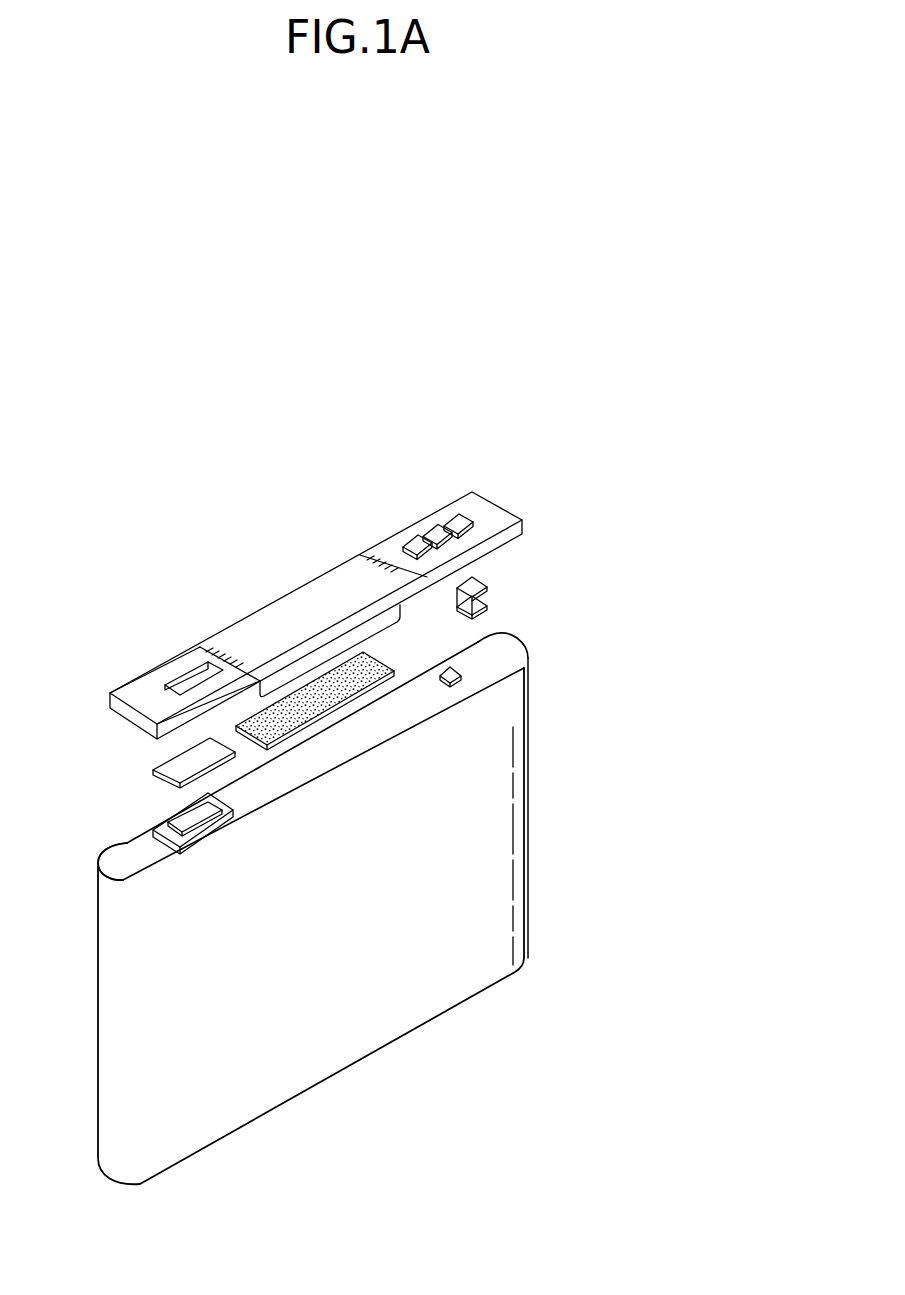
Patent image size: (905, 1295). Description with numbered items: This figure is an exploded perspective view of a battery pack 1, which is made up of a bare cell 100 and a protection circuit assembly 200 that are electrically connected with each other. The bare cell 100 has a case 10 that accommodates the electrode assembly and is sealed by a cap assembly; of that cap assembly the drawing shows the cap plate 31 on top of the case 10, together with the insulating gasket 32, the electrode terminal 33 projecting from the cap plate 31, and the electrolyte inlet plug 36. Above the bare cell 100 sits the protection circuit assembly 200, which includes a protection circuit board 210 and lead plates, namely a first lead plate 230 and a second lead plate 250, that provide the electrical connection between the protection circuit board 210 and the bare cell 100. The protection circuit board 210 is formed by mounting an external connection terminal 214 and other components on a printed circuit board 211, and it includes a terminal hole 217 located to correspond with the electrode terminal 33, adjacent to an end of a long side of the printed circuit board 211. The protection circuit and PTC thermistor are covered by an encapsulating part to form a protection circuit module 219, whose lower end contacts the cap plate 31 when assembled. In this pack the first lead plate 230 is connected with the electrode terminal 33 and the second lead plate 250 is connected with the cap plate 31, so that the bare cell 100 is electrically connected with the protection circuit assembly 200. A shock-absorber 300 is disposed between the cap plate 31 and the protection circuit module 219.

The battery pack 1 is at (32, 652).
The case 10 is at (526, 858).
The cap plate 31 is at (531, 643).
The insulating gasket 32 is at (112, 843).
The electrode terminal 33 is at (178, 822).
The electrolyte inlet plug 36 is at (463, 665).
The bare cell 100 is at (568, 780).
The protection circuit assembly 200 is at (547, 516).
The protection circuit board 210 is at (267, 607).
The printed circuit board 211 is at (227, 637).
The external connection terminal 214 is at (418, 538).
The terminal hole 217 is at (187, 682).
The protection circuit module 219 is at (343, 642).
The first lead plate 230 is at (158, 764).
The second lead plate 250 is at (479, 583).
The shock-absorber 300 is at (387, 657).